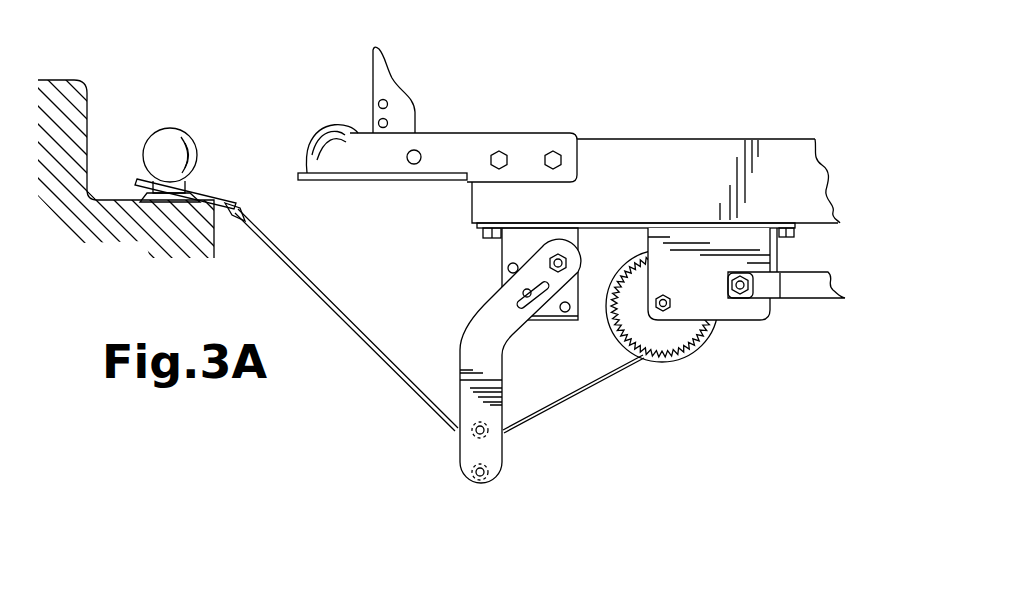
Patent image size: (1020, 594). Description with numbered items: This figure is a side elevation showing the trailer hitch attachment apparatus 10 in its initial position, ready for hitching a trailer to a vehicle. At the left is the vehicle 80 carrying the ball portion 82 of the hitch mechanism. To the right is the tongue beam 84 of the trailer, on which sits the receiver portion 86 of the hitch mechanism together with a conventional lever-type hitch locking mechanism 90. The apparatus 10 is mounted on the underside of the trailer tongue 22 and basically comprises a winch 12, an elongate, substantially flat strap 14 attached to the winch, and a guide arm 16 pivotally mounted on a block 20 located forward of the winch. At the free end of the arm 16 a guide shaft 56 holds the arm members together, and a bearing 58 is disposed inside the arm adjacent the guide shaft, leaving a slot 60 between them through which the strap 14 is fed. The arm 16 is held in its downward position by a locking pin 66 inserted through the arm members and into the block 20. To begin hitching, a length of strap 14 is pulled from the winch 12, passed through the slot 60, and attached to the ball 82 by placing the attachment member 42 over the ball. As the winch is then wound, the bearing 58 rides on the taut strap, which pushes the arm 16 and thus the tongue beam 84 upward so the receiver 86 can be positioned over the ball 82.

The trailer hitch attachment apparatus 10 is at (724, 369).
The winch 12 is at (797, 255).
The strap 14 is at (370, 343).
The guide arm 16 is at (431, 338).
The block 20 is at (502, 257).
The tongue 22 is at (850, 146).
The attachment member 42 is at (135, 184).
The guide shaft 56 is at (487, 483).
The bearing 58 is at (468, 438).
The slot 60 is at (509, 454).
The locking pin 66 is at (538, 320).
The vehicle 80 is at (70, 80).
The ball portion 82 is at (196, 143).
The tongue beam 84 is at (693, 160).
The receiver portion 86 is at (527, 133).
The hitch locking mechanism 90 is at (388, 72).